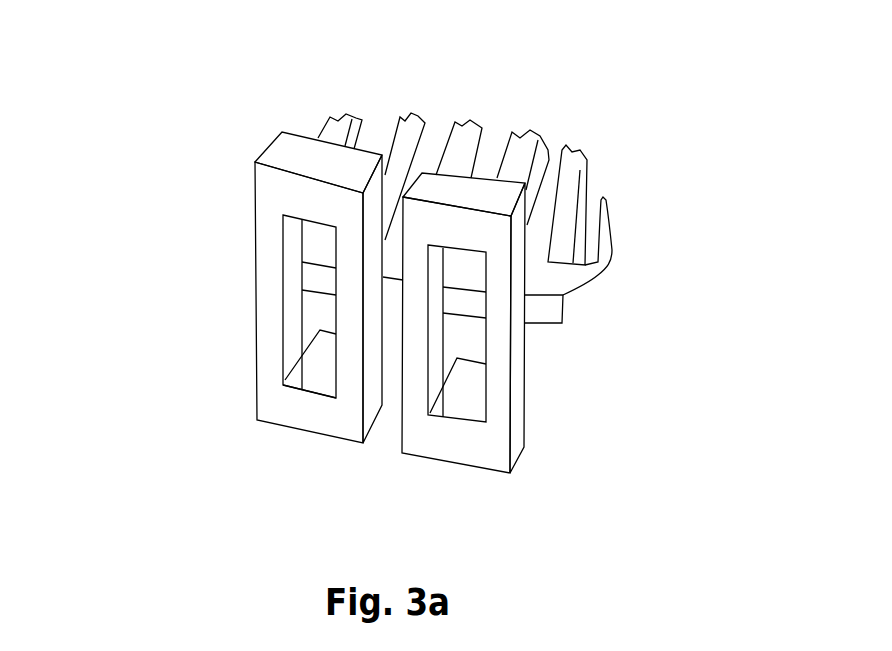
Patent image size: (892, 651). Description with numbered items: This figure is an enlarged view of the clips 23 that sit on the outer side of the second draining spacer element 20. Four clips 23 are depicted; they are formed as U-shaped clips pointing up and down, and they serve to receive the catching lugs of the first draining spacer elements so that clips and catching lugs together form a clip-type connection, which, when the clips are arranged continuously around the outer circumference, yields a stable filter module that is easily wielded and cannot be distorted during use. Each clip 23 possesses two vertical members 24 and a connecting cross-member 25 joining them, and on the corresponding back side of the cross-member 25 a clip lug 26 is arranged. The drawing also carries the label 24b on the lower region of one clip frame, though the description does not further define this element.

The second draining spacer element 20 is at (538, 310).
The clip 23 is at (240, 208).
The vertical member 24 is at (267, 237).
The frame bottom web 24b is at (270, 360).
The connecting cross-member 25 is at (307, 158).
The clip lug 26 is at (366, 142).